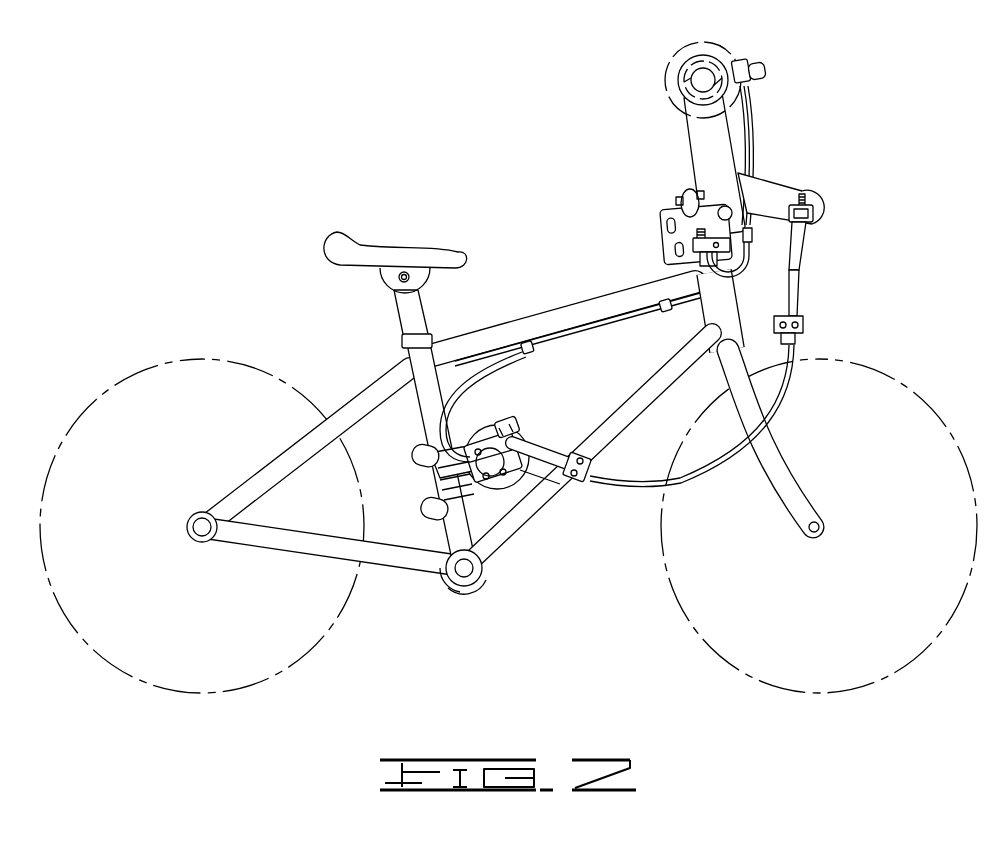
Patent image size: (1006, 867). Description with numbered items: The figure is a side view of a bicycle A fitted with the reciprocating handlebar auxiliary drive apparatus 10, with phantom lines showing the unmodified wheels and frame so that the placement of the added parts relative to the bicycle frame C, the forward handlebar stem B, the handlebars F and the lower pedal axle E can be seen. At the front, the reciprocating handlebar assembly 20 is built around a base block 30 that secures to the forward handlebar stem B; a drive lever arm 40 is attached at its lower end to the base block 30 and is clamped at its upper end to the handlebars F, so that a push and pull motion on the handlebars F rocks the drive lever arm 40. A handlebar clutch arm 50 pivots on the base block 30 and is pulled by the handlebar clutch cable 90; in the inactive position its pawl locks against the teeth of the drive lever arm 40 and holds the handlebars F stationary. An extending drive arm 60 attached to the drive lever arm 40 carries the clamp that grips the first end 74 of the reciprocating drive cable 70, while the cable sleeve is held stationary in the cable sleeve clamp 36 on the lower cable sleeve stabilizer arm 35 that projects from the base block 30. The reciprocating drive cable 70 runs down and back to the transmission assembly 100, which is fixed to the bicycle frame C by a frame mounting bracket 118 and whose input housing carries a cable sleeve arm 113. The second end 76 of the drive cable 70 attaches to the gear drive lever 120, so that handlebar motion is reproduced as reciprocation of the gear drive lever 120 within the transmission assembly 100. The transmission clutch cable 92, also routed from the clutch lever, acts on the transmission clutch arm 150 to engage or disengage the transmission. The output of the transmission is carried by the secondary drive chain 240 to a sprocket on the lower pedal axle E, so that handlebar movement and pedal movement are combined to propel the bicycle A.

The reciprocating handlebar auxiliary drive apparatus 10 is at (490, 125).
The reciprocating handlebar assembly 20 is at (783, 150).
The base block 30 is at (668, 218).
The lower cable sleeve stabilizer arm 35 is at (774, 306).
The cable sleeve clamp 36 is at (802, 326).
The drive lever arm 40 is at (692, 146).
The handlebar clutch arm 50 is at (752, 276).
The extending drive arm 60 is at (782, 190).
The reciprocating drive cable 70 is at (780, 405).
The first end 74 is at (792, 240).
The second end 76 is at (537, 440).
The handlebar clutch cable 90 is at (758, 230).
The transmission clutch cable 92 is at (607, 323).
The transmission assembly 100 is at (478, 432).
The cable sleeve arm 113 is at (547, 480).
The frame mounting bracket 118 is at (422, 455).
The gear drive lever 120 is at (517, 428).
The transmission clutch arm 150 is at (438, 490).
The secondary drive chain 240 is at (477, 587).
The bicycle A is at (365, 380).
The forward handlebar stem B is at (680, 272).
The bicycle frame C is at (517, 537).
The lower pedal axle E is at (466, 568).
The handlebars F is at (703, 80).